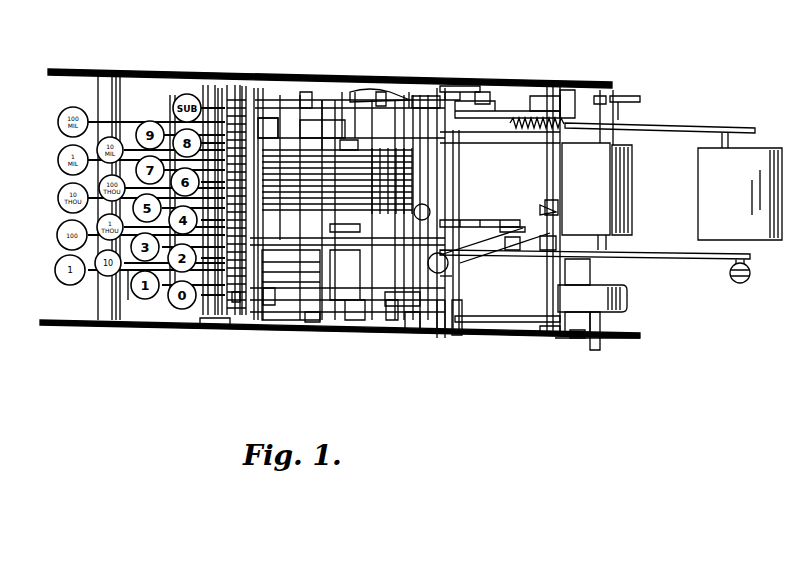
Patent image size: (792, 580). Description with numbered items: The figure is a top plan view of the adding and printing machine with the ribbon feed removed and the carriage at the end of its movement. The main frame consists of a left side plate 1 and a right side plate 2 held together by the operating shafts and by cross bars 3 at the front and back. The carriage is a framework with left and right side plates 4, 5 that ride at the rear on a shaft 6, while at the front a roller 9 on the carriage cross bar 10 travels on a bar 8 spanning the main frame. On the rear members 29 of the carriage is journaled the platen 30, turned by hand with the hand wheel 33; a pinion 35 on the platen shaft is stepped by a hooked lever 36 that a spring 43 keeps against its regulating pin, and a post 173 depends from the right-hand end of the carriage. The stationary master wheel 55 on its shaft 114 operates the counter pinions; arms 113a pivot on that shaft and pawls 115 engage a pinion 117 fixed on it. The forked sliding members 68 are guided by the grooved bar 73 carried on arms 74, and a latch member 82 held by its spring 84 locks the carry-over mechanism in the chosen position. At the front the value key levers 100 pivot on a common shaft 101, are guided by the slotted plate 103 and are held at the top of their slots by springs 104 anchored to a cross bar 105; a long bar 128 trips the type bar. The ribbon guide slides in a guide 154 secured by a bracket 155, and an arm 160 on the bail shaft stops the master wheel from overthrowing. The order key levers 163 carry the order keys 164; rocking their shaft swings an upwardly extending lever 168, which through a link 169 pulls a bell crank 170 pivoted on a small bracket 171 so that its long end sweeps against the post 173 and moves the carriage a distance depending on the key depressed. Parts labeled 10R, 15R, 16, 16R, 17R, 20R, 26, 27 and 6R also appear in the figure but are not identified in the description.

The left side plate 1 is at (342, 92).
The right side plate 2 is at (413, 337).
The cross bars 3 is at (98, 105).
The carriage left side plate 4 is at (508, 92).
The carriage right side plate 5 is at (527, 252).
The shaft 6 is at (602, 317).
The bar 8 is at (254, 90).
The roller 9 is at (242, 92).
The cross bar of the carriage 10 is at (263, 127).
The key 10R is at (147, 296).
The lever 15R is at (552, 206).
The lever 16 is at (575, 335).
The lever 16R is at (392, 308).
The lever 17R is at (513, 237).
The key stem 20R is at (175, 97).
The shaft 26 is at (592, 352).
The bar 27 is at (510, 330).
The rear members of the carriage frame 29 is at (665, 127).
The platen 30 is at (588, 172).
The hand wheel 33 is at (620, 106).
The pinion 35 is at (618, 88).
The lever 36 is at (563, 92).
The spring 43 is at (545, 92).
The master wheel 55 is at (470, 223).
The forked sliding member 68 is at (305, 92).
The grooved bar 73 is at (345, 148).
The arms 74 is at (350, 148).
The latch member 82 is at (380, 92).
The spring 84 is at (355, 92).
The key levers 100 is at (268, 295).
The common shaft 101 is at (312, 323).
The slotted plate 103 is at (220, 310).
The spring 104 is at (235, 297).
The common cross bar 105 is at (222, 92).
The arm 113a is at (477, 88).
The shaft of the master wheel 114 is at (453, 145).
The pawl 115 is at (409, 92).
The pinion 117 is at (480, 92).
The long bar 128 is at (517, 132).
The guide 154 is at (550, 210).
The bracket 155 is at (548, 332).
The arm 160 is at (510, 223).
The key levers 163 is at (128, 279).
The order keys 164 is at (58, 280).
The lever 168 is at (397, 305).
The link 169 is at (440, 338).
The bell crank 170 is at (440, 279).
The small bracket 171 is at (457, 335).
The post 173 is at (613, 238).
The type bar bank 6R is at (413, 168).